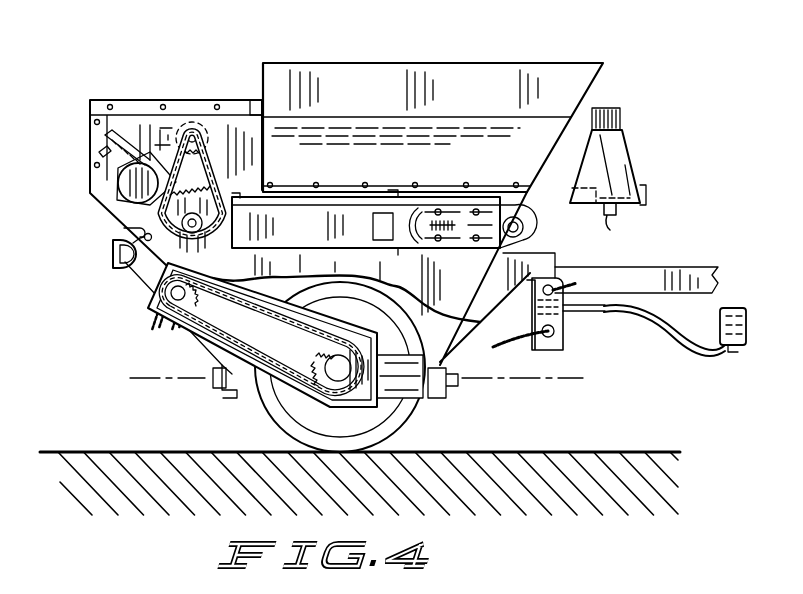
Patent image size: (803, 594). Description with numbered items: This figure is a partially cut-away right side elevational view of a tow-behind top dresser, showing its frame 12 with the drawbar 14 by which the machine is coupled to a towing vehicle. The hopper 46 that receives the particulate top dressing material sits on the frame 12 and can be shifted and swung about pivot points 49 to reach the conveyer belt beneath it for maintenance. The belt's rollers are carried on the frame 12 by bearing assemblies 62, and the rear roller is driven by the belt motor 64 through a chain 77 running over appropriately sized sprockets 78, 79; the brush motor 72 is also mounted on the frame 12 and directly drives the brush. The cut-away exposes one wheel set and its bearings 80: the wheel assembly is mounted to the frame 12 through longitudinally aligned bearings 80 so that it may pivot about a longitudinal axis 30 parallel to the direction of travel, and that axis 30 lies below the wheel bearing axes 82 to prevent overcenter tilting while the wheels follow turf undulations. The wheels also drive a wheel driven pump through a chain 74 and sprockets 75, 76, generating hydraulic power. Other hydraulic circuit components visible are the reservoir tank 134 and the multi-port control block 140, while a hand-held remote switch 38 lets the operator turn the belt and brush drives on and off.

The frame 12 is at (228, 362).
The drawbar 14 is at (680, 267).
The longitudinal axis 30 is at (553, 380).
The remote switch 38 is at (742, 350).
The hopper 46 is at (522, 63).
The pivot points 49 is at (124, 228).
The bearing assemblies 62 is at (523, 233).
The belt motor 64 is at (152, 103).
The brush motor 72 is at (122, 193).
The chain 74 is at (218, 293).
The sprocket 75 is at (150, 305).
The sprocket 76 is at (307, 393).
The chain 77 is at (210, 153).
The sprocket 78 is at (192, 130).
The sprocket 79 is at (130, 260).
The bearings 80 is at (223, 395).
The wheel bearing axes 82 is at (340, 368).
The reservoir tank 134 is at (625, 163).
The multi-function control block 140 is at (567, 325).